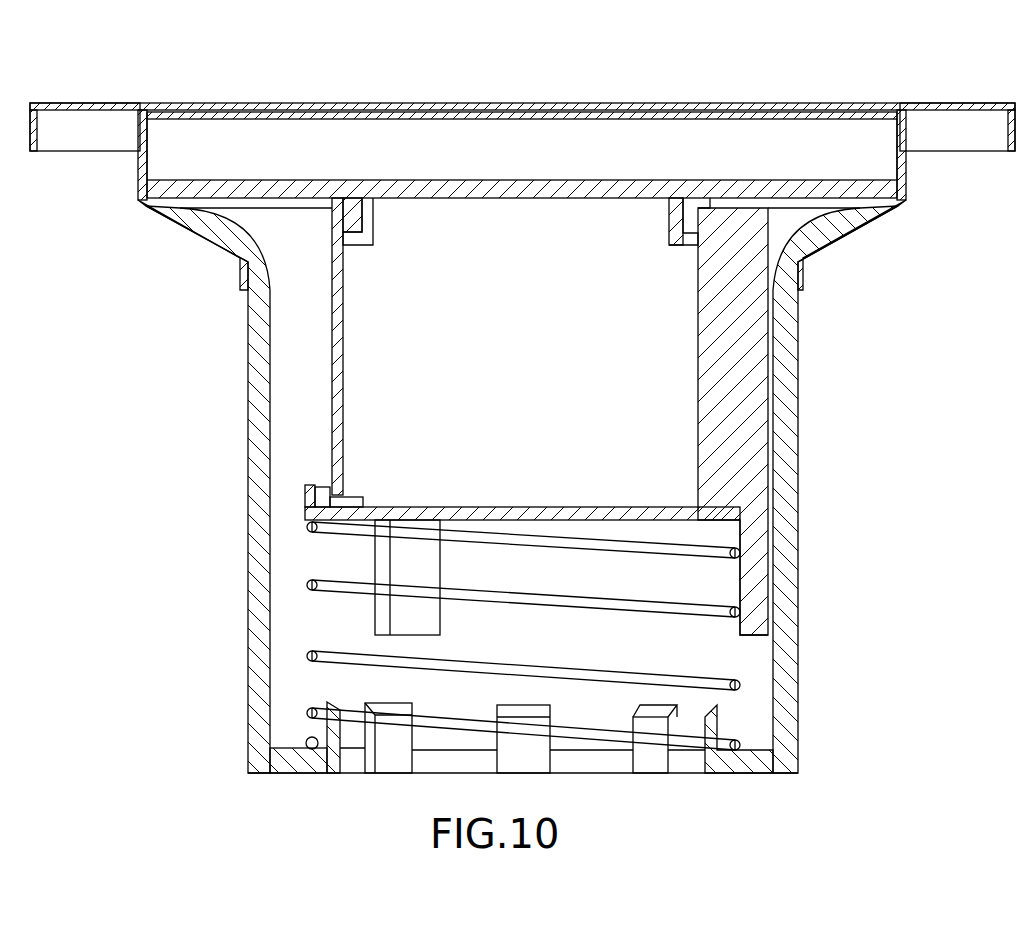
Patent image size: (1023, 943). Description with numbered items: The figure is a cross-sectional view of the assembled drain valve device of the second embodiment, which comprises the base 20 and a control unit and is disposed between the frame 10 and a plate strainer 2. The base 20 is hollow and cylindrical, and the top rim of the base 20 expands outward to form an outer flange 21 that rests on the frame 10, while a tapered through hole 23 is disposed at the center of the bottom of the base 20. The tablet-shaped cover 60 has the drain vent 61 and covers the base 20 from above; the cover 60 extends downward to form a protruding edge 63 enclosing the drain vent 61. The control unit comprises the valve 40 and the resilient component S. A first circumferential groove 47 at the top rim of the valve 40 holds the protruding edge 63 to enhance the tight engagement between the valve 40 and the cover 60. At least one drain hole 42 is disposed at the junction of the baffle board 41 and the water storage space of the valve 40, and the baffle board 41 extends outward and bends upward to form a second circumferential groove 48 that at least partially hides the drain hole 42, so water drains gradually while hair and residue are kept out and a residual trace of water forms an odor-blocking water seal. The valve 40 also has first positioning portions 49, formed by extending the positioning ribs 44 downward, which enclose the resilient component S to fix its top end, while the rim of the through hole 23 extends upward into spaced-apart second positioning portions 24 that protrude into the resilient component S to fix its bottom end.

The plate strainer 2 is at (640, 107).
The frame 10 is at (971, 106).
The base 20 is at (247, 378).
The outer flange 21 is at (228, 230).
The tapered through hole 23 is at (715, 768).
The second positioning portions 24 is at (648, 745).
The valve 40 is at (343, 333).
The baffle board 41 is at (637, 512).
The drain hole 42 is at (337, 490).
The positioning ribs 44 is at (740, 388).
The first circumferential groove 47 is at (693, 237).
The second circumferential groove 48 is at (307, 490).
The first positioning portions 49 is at (753, 570).
The cover 60 is at (818, 190).
The drain vent 61 is at (368, 197).
The protruding edge 63 is at (690, 212).
The resilient component S is at (740, 688).